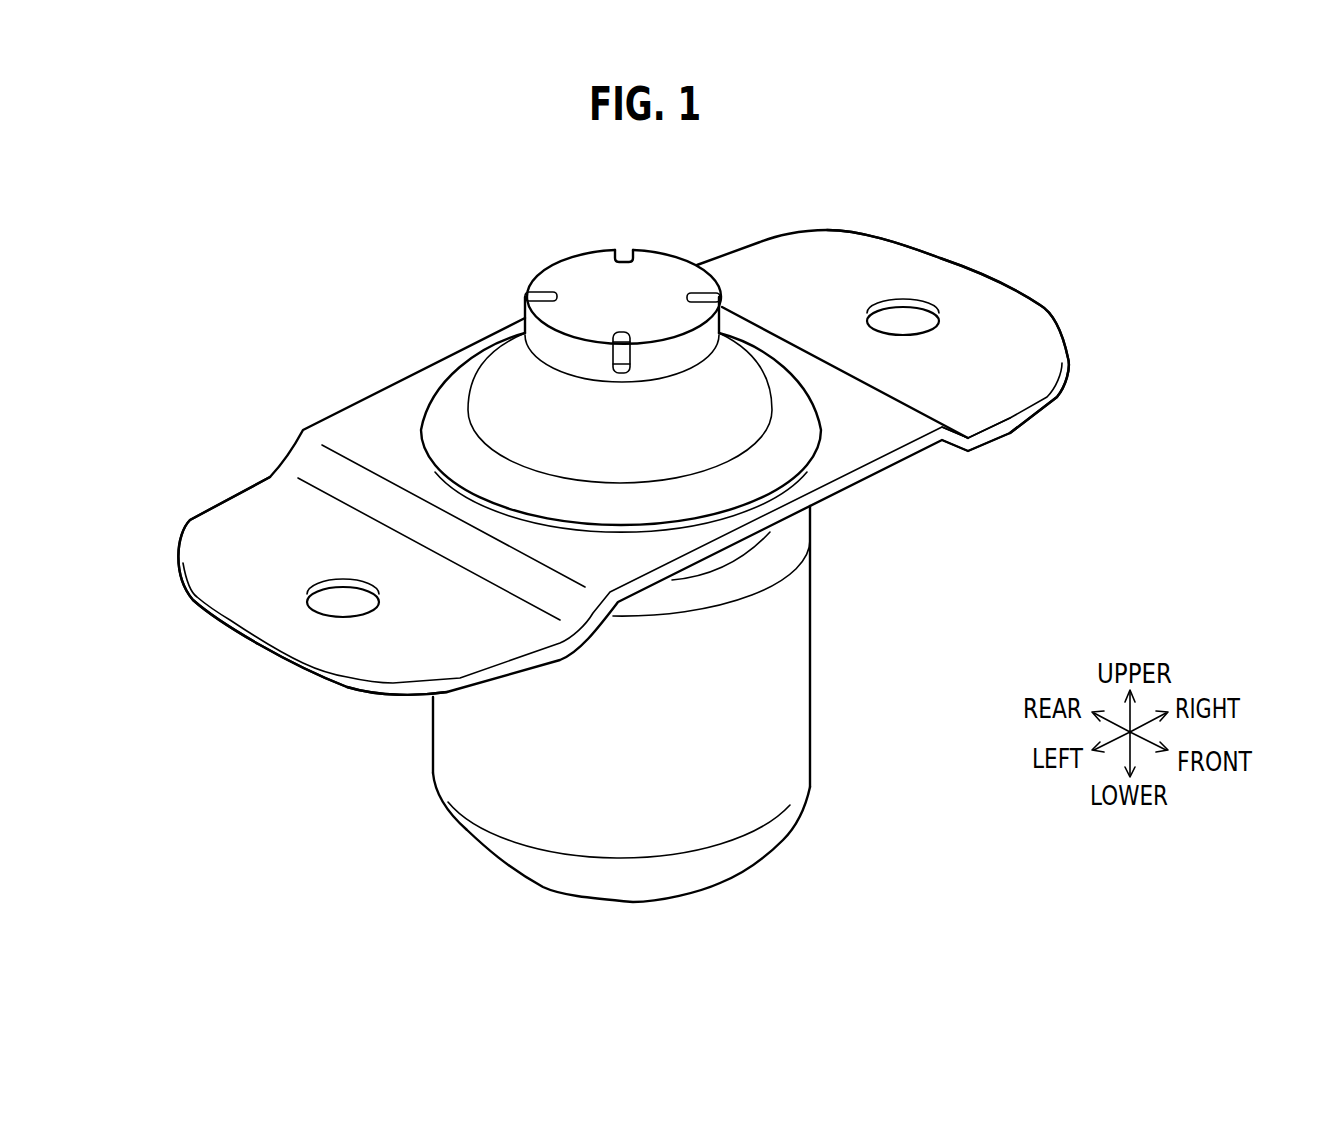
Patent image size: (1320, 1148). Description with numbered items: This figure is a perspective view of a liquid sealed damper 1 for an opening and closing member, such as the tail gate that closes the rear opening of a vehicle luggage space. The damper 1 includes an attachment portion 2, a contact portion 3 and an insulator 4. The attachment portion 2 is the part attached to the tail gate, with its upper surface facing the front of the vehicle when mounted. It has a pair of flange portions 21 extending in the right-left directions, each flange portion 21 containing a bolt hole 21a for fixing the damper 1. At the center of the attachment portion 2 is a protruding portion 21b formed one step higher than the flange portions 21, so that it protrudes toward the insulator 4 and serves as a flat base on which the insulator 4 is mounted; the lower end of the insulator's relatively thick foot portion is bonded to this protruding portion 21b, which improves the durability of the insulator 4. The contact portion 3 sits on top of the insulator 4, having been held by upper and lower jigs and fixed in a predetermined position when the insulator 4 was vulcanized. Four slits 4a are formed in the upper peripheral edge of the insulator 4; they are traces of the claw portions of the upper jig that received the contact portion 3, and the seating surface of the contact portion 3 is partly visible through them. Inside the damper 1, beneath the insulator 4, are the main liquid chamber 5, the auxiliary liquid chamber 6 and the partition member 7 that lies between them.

The liquid sealed damper 1 is at (310, 304).
The attachment portion 2 is at (831, 226).
The flange portion 21 is at (232, 537).
The bolt hole 21a is at (330, 605).
The protruding portion 21b is at (855, 441).
The contact portion 3 is at (578, 280).
The insulator 4 is at (517, 382).
The slit 4a is at (540, 293).
The main liquid chamber 5 is at (713, 417).
The auxiliary liquid chamber 6 is at (715, 832).
The partition member 7 is at (767, 658).